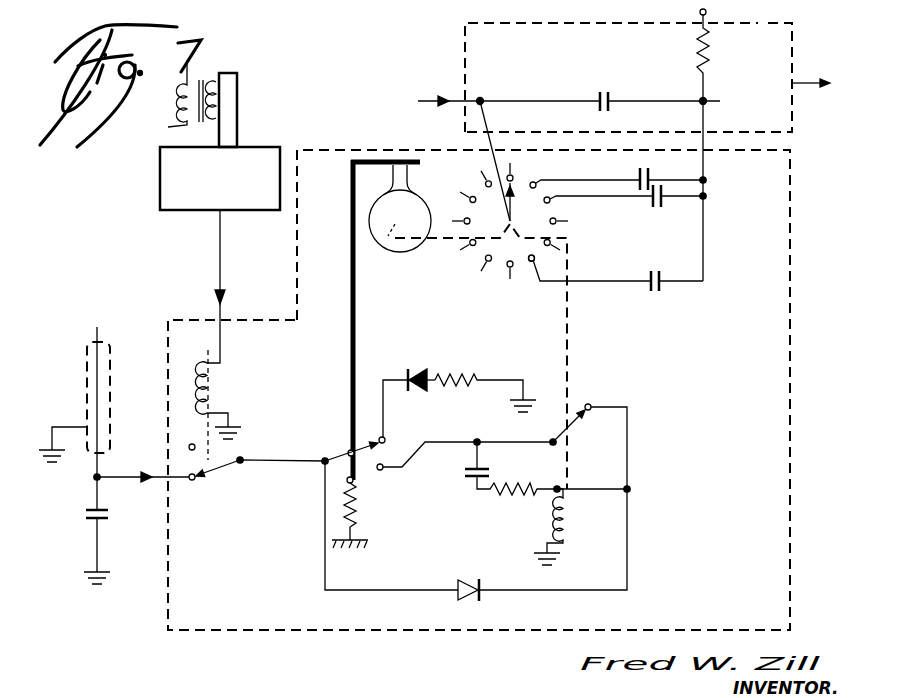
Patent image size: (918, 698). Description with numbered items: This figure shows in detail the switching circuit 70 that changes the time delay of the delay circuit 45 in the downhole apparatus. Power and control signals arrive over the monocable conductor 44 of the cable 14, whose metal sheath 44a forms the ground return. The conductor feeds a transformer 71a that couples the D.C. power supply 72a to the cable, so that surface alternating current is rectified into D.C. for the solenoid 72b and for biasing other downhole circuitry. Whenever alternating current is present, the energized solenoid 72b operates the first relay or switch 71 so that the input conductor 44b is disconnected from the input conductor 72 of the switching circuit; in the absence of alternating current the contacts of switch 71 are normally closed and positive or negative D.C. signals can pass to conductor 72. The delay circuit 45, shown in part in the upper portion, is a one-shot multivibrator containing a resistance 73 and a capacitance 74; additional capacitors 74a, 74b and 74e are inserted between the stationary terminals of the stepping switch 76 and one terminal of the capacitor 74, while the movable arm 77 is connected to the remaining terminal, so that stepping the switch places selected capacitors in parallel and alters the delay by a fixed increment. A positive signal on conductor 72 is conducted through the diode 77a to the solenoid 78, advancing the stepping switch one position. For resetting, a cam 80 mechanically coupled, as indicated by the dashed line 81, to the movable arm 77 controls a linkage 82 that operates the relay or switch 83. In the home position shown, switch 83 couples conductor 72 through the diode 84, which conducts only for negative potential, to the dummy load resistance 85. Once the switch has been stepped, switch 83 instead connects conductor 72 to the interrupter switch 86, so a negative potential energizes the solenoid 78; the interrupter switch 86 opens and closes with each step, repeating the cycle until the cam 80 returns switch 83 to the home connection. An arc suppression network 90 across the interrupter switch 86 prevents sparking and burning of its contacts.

The cable 14 is at (118, 387).
The monocable conductor 44 is at (185, 87).
The metal sheath 44a is at (87, 345).
The input conductor 44b is at (125, 480).
The delay circuit 45 is at (763, 26).
The switching circuit 70 is at (312, 628).
The first relay or switch 71 is at (218, 477).
The transformer 71a is at (219, 76).
The input conductor 72 is at (284, 459).
The D.C. power supply 72a is at (167, 215).
The solenoid 72b is at (214, 388).
The resistance 73 is at (710, 52).
The capacitance 74 is at (603, 90).
The capacitor 74a is at (645, 168).
The capacitor 74b is at (652, 207).
The capacitor 74e is at (649, 292).
The stepping switch 76 is at (524, 283).
The movable arm 77 is at (515, 202).
The diode 77a is at (470, 582).
The solenoid 78 is at (572, 522).
The cam 80 is at (400, 252).
The dashed line 81 is at (447, 240).
The linkage 82 is at (356, 315).
The relay or switch 83 is at (360, 455).
The diode 84 is at (411, 367).
The resistance 85 is at (457, 373).
The interrupter switch 86 is at (556, 440).
The arc suppression network 90 is at (503, 478).